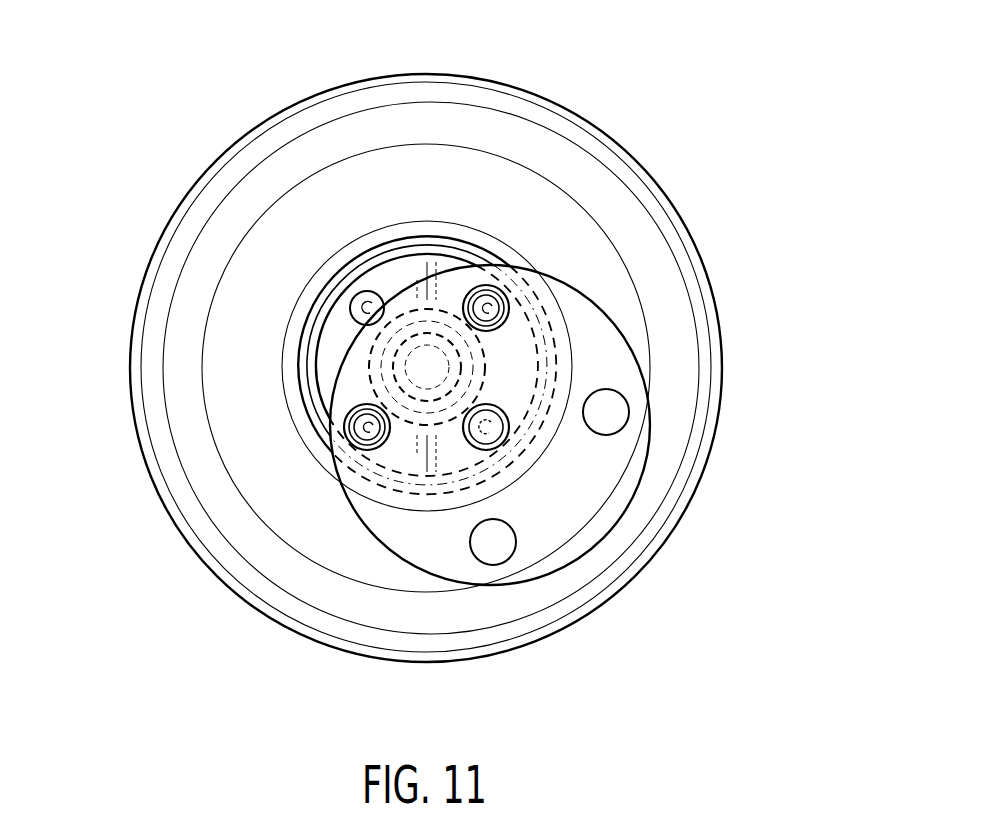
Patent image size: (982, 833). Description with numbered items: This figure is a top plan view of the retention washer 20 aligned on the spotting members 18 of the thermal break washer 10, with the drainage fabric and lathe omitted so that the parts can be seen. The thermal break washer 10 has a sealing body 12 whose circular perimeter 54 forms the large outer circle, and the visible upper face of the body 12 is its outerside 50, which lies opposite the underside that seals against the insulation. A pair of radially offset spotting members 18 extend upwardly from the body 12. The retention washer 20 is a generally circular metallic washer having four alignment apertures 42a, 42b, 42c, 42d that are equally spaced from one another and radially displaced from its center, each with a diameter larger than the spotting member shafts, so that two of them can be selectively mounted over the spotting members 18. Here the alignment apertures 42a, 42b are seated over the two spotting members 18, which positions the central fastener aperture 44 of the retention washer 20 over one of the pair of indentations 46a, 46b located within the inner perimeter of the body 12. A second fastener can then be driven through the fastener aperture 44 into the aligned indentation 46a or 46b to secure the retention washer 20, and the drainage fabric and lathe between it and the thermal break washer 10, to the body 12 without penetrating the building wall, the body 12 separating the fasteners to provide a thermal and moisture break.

The thermal break washer 10 is at (430, 354).
The sealing body 12 is at (385, 121).
The circular perimeter 54 is at (507, 84).
The outerside 50 is at (550, 156).
The retention washer 20 is at (650, 447).
The fastener aperture 44 is at (488, 438).
The spotting members 18 is at (513, 297).
The alignment aperture 42a is at (513, 306).
The alignment aperture 42b is at (372, 437).
The alignment aperture 42c is at (622, 392).
The alignment aperture 42d is at (498, 563).
The indentation 46a is at (490, 433).
The indentation 46b is at (353, 309).